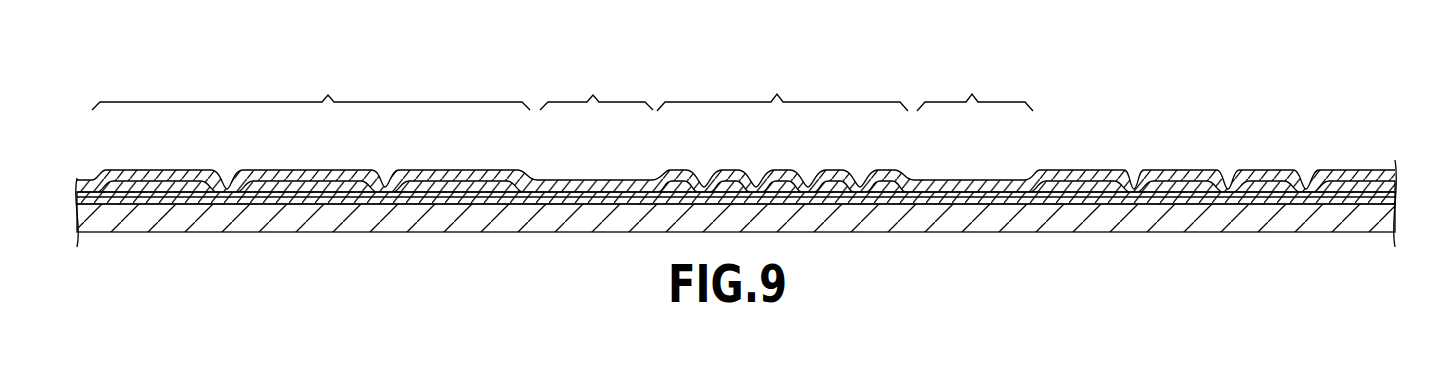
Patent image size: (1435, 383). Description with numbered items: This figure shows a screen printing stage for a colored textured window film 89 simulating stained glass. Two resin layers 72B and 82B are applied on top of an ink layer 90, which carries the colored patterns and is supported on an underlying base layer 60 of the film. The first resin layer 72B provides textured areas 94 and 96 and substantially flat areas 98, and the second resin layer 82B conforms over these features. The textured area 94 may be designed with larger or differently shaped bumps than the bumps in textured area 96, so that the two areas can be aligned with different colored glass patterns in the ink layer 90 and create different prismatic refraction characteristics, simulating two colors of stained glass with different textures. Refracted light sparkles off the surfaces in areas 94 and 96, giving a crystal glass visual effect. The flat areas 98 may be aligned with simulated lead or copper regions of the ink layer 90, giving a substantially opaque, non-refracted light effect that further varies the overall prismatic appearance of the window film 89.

The textured window film 89 is at (736, 149).
The textured area 94 is at (311, 87).
The textured area 96 is at (782, 86).
The substantially flat area 98 is at (786, 86).
The resin layer 82B is at (158, 169).
The resin layer 72B is at (305, 187).
The ink layer 90 is at (189, 200).
The substrate 60 is at (324, 233).